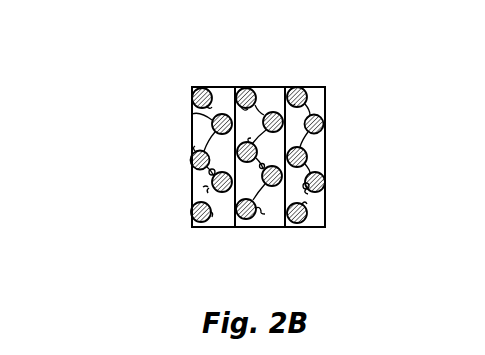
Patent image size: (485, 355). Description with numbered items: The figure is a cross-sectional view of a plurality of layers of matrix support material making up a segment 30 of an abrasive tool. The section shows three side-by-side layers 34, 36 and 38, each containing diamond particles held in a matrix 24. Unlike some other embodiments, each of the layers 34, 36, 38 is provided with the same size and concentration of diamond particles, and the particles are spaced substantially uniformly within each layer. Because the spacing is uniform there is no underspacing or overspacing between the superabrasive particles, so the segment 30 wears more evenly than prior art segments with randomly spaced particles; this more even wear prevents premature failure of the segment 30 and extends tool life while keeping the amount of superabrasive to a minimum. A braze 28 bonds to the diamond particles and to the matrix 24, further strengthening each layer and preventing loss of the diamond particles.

The segment 30 is at (124, 107).
The matrix 24 is at (203, 187).
The braze 28 is at (208, 193).
The layer 34 is at (224, 97).
The layer 36 is at (270, 97).
The layer 38 is at (310, 93).